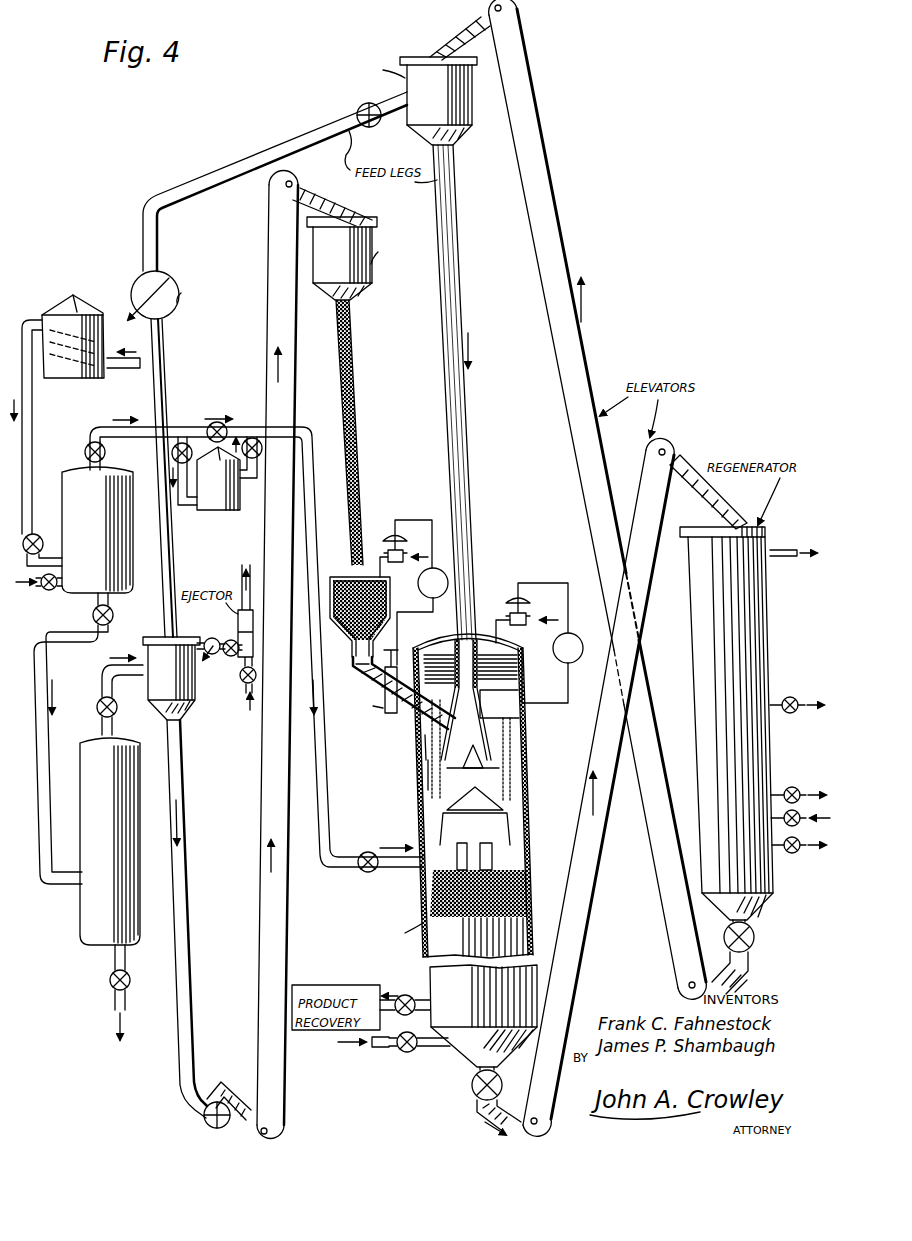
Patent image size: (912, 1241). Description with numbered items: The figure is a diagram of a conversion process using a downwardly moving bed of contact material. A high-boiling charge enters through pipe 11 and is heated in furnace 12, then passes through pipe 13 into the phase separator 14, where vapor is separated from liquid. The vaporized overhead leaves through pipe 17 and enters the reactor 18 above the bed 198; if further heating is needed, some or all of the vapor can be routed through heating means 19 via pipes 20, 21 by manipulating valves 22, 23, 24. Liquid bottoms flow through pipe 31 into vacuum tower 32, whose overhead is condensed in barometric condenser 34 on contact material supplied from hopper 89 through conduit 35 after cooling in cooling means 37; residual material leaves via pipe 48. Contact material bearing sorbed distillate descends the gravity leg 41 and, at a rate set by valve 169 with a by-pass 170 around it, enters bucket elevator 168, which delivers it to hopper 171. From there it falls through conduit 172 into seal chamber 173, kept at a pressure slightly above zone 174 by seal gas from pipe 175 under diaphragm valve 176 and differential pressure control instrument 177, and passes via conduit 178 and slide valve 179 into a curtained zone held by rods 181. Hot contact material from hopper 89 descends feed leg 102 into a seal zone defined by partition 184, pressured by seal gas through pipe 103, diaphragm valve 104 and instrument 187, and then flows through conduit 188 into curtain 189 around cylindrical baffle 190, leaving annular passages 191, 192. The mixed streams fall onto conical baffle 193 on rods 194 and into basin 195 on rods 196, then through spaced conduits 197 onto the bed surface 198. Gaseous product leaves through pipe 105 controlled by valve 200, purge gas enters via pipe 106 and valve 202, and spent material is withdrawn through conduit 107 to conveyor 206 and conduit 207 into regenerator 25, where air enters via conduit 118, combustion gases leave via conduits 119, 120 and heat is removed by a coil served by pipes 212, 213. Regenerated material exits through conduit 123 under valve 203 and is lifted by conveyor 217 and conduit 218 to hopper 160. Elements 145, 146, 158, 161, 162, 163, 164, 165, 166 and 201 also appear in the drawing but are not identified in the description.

The pipe 11 is at (132, 360).
The furnace 12 is at (88, 312).
The pipe 13 is at (34, 417).
The phase separator 14 is at (99, 530).
The pipe 17 is at (100, 432).
The reactor 18 is at (426, 781).
The heating means 19 is at (218, 478).
The pipe 20 is at (186, 508).
The pipe 21 is at (248, 480).
The valve 22 is at (186, 438).
The valve 23 is at (219, 422).
The valve 24 is at (255, 436).
The regenerator 25 is at (760, 629).
The pipe 31 is at (46, 857).
The vacuum tower 32 is at (110, 841).
The barometric condenser 34 is at (171, 678).
The conduit 35 is at (255, 156).
The cooling means 37 is at (171, 316).
The gravity leg 41 is at (185, 773).
The pipe 48 is at (129, 986).
The storage hopper 89 is at (398, 101).
The feed leg 102 is at (460, 446).
The pipe 103 is at (530, 616).
The diaphragm valve 104 is at (505, 617).
The pipe 105 is at (391, 1011).
The pipe 106 is at (430, 1049).
The conduit 107 is at (477, 1110).
The conduit 118 is at (793, 697).
The conduit 119 is at (787, 559).
The conduit 120 is at (798, 853).
The conduit 123 is at (756, 974).
The inlet valve 145 is at (42, 590).
The separator bottom valve 146 is at (92, 615).
The vapor line to hopper 158 is at (117, 677).
The hopper 160 is at (427, 766).
The reactor inner wall 161 is at (423, 738).
The valve 162 is at (360, 108).
The disengaging section 163 is at (496, 674).
The steam valve 164 is at (242, 662).
The ejector inlet 165 is at (209, 638).
The valve 166 is at (227, 656).
The bucket elevator 168 is at (266, 236).
The valve 169 is at (204, 1124).
The by-pass 170 is at (226, 1083).
The hopper 171 is at (373, 280).
The conduit 172 is at (357, 348).
The seal chamber 173 is at (343, 577).
The zone 174 is at (520, 716).
The pipe 175 is at (408, 548).
The diaphragm valve 176 is at (390, 537).
The differential pressure control instrument 177 is at (421, 590).
The conduit 178 is at (366, 685).
The slide valve 179 is at (390, 716).
The rods 181 is at (506, 735).
The partition 184 is at (508, 688).
The differential pressure control instrument 187 is at (577, 637).
The conduit 188 is at (498, 704).
The curtain 189 is at (488, 722).
The cylindrical baffle 190 is at (497, 759).
The annular passage 191 is at (505, 770).
The annular passage 192 is at (500, 747).
The conical baffle 193 is at (500, 790).
The rods 194 is at (513, 816).
The basin 195 is at (507, 805).
The rods 196 is at (510, 831).
The conduits 197 is at (505, 850).
The bed 198 is at (516, 878).
The valve 200 is at (406, 995).
The reactor discharge valve 201 is at (474, 1088).
The valve 202 is at (413, 1053).
The valve 203 is at (757, 937).
The conveyor 206 is at (578, 981).
The conduit 207 is at (726, 514).
The pipe 212 is at (805, 782).
The pipe 213 is at (800, 826).
The conveyor 217 is at (550, 177).
The conduit 218 is at (455, 28).